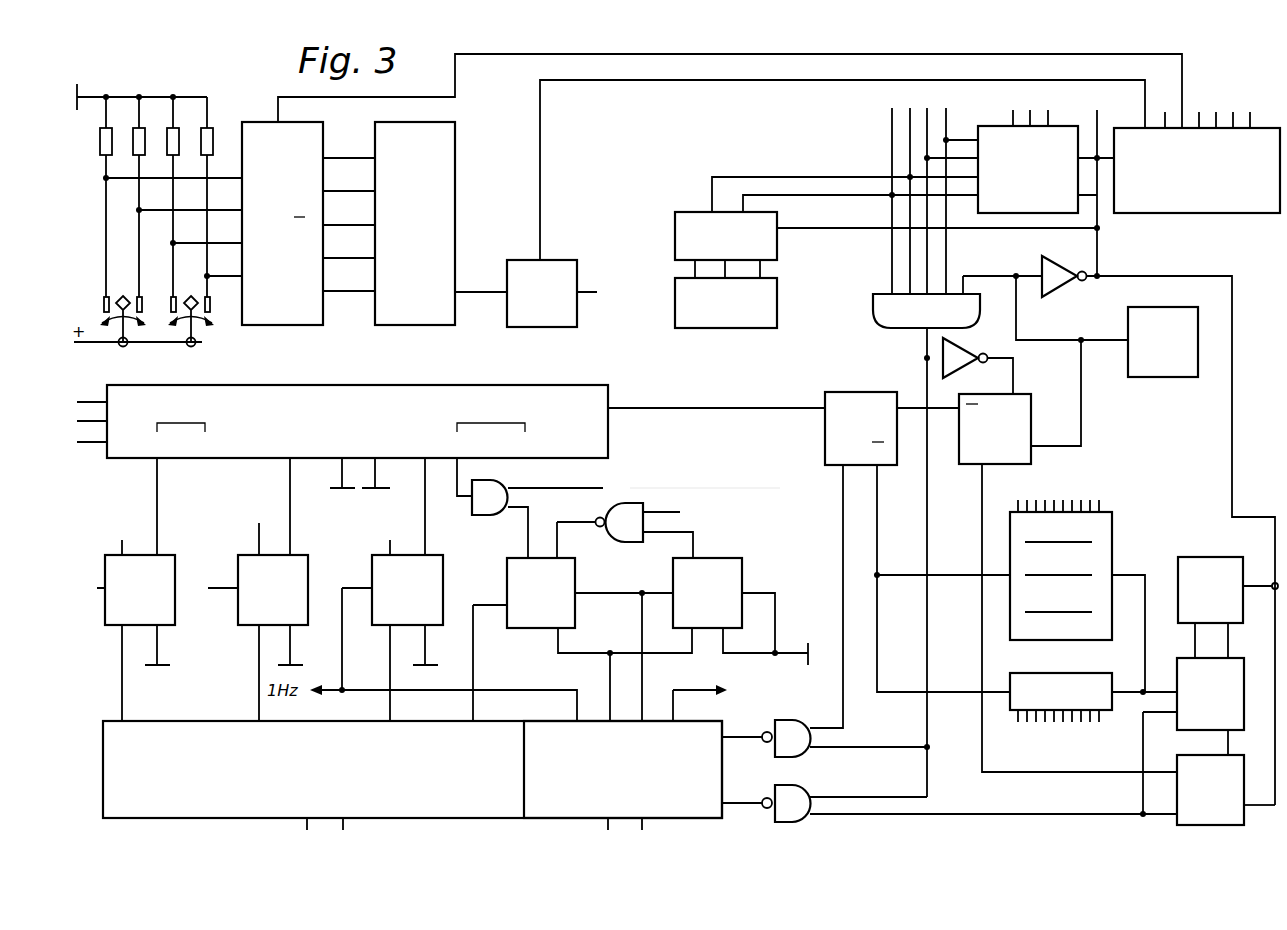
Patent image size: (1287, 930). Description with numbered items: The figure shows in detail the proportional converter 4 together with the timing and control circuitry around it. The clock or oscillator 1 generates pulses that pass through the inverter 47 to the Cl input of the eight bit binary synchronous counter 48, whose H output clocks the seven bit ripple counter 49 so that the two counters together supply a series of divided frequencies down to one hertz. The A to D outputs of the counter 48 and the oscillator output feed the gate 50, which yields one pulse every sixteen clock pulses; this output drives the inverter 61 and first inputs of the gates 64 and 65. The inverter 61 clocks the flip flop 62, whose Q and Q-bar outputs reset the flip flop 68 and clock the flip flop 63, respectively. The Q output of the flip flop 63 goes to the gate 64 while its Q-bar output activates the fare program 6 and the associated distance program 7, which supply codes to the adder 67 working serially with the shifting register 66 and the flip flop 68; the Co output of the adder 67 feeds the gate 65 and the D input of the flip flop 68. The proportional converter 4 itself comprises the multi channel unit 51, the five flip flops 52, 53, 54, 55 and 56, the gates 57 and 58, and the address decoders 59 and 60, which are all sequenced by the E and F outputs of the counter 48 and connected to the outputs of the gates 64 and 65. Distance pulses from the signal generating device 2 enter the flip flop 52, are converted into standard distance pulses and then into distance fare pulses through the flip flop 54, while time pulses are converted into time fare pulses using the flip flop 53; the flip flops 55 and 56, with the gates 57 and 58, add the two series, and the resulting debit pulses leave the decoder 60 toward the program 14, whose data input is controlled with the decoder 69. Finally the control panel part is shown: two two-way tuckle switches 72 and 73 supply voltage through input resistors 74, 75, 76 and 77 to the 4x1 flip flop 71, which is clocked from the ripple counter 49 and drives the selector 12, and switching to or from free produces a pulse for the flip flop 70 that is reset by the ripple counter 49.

The clock or oscillator 1 is at (1160, 377).
The signal generating device 2 is at (1196, 118).
The proportional converter 4 is at (690, 456).
The fare program 6 is at (1112, 512).
The distance program 7 is at (1108, 710).
The selector 12 is at (455, 130).
The program 14 is at (722, 328).
The inverter 47 is at (1042, 266).
The eight bit binary synchronous counter 48 is at (1000, 124).
The seven bit ripple counter 49 is at (1185, 213).
The gate 50 is at (874, 316).
The multi channel unit 51 is at (375, 385).
The flip flop 52 is at (165, 625).
The flip flop 53 is at (298, 625).
The flip flop 54 is at (432, 625).
The flip flop 55 is at (578, 628).
The flip flop 56 is at (742, 563).
The gate 57 is at (480, 515).
The gate 58 is at (612, 542).
The address decoder 59 is at (412, 775).
The address decoder 60 is at (645, 757).
The inverter 61 is at (957, 352).
The flip flop 62 is at (1031, 410).
The flip flop 63 is at (857, 393).
The gate 64 is at (795, 720).
The gate 65 is at (803, 787).
The 64x1 bit shifting register 66 is at (1178, 568).
The adder 67 is at (1177, 666).
The flip flop 68 is at (1177, 766).
The decoder 69 is at (696, 210).
The flip flop 70 is at (560, 260).
The 4x1 flip flop 71 is at (323, 126).
The two-way tuckle switch 72 is at (123, 336).
The two-way tuckle switch 73 is at (191, 336).
The input resistor 74 is at (113, 132).
The input resistor 75 is at (147, 132).
The input resistor 76 is at (181, 132).
The input resistor 77 is at (215, 132).